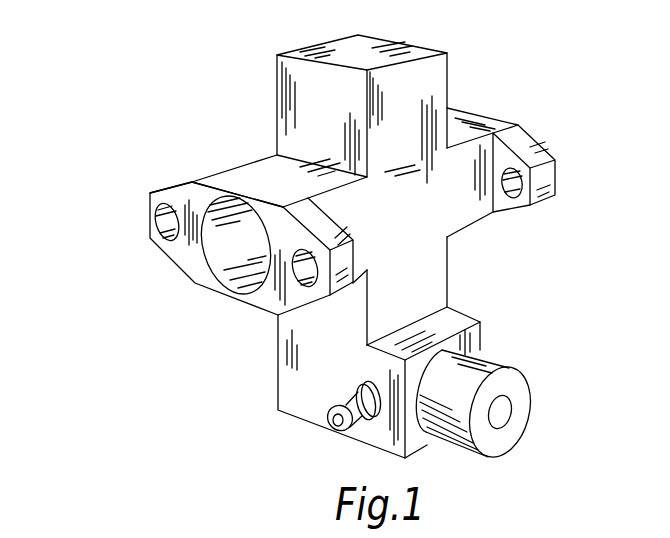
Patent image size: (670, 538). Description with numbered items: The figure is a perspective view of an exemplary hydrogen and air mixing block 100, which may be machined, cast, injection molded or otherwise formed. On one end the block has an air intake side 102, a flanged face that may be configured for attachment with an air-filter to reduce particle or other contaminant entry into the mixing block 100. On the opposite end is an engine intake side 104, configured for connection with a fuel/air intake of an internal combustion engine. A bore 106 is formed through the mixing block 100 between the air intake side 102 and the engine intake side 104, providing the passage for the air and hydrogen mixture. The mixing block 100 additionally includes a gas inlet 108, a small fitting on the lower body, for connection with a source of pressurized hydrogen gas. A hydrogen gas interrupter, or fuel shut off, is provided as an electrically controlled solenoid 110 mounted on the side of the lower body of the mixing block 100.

The mixing block 100 is at (369, 232).
The air intake side 102 is at (190, 268).
The engine intake side 104 is at (541, 133).
The bore 106 is at (217, 230).
The gas inlet 108 is at (328, 418).
The electrically controlled solenoid 110 is at (484, 372).